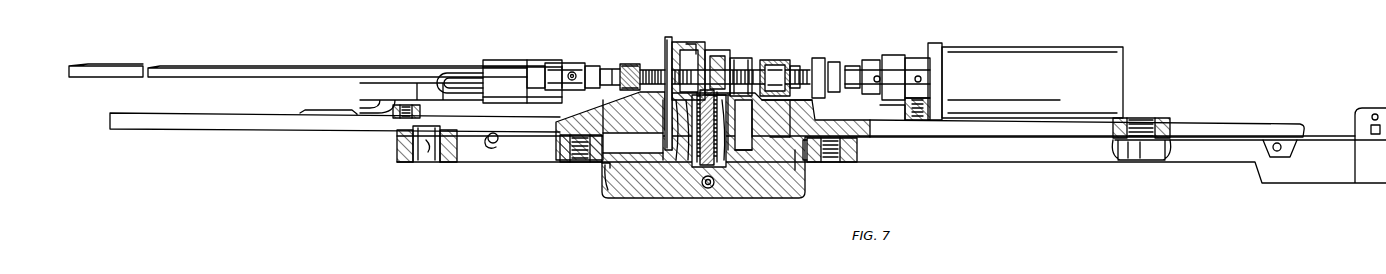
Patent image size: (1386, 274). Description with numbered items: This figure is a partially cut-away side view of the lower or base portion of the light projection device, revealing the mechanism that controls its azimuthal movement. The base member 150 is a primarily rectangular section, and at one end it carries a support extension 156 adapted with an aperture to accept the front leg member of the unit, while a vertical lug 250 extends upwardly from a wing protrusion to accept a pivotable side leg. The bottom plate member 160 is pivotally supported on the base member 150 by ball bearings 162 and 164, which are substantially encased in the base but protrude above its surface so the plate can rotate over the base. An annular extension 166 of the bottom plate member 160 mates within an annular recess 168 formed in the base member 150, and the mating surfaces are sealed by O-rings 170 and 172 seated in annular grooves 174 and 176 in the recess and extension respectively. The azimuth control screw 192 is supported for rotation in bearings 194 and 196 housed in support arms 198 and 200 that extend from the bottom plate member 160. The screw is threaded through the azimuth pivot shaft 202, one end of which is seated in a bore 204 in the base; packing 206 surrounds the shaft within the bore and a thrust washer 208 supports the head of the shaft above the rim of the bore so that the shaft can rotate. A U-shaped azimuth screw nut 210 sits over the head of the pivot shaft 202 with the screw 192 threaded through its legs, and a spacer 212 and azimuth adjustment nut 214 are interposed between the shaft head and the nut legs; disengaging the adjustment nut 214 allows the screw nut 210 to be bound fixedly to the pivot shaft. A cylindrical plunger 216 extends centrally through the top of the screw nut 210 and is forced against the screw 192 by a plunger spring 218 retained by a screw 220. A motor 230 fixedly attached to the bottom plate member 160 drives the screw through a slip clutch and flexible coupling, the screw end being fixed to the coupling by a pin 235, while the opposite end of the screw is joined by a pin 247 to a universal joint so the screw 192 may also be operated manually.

The base member 150 is at (645, 160).
The support extension 156 is at (1374, 106).
The bottom plate member 160 is at (196, 122).
The ball bearing 162 is at (1274, 140).
The ball bearing 164 is at (492, 146).
The annular extension 166 is at (796, 170).
The annular recess 168 is at (776, 165).
The O-ring 170 is at (812, 172).
The O-ring 172 is at (824, 162).
The annular groove 174 is at (610, 175).
The annular groove 176 is at (599, 163).
The azimuth control screw 192 is at (757, 100).
The bearing 194 is at (632, 66).
The bearing 196 is at (794, 66).
The support arm 198 is at (655, 66).
The support arm 200 is at (777, 60).
The azimuth pivot shaft 202 is at (692, 143).
The bore 204 is at (722, 160).
The packing 206 is at (706, 188).
The thrust washer 208 is at (735, 150).
The azimuth screw nut 210 is at (746, 57).
The spacer 212 is at (674, 140).
The azimuth adjustment nut 214 is at (690, 110).
The cylindrical plunger 216 is at (728, 50).
The plunger spring 218 is at (700, 44).
The screw 220 is at (668, 40).
The motor 230 is at (1112, 82).
The pin 235 is at (820, 58).
The pin 247 is at (606, 72).
The vertical lug 250 is at (432, 162).